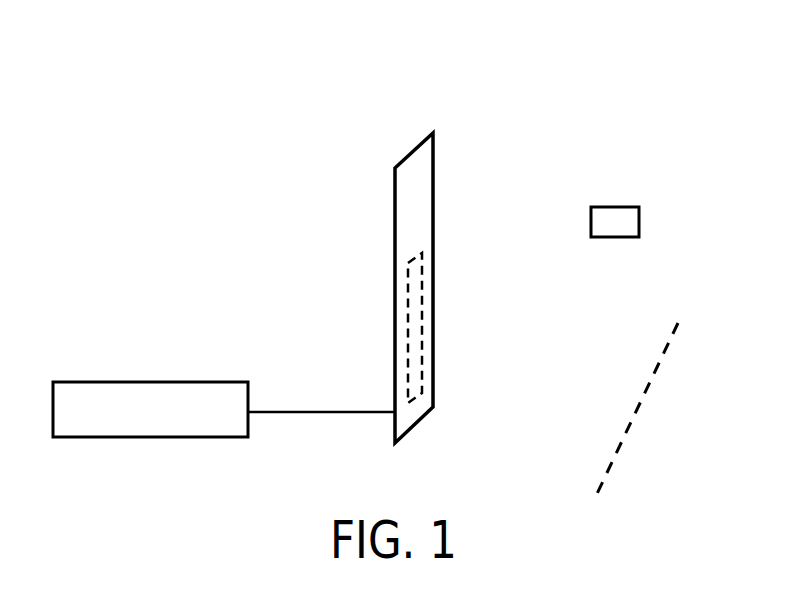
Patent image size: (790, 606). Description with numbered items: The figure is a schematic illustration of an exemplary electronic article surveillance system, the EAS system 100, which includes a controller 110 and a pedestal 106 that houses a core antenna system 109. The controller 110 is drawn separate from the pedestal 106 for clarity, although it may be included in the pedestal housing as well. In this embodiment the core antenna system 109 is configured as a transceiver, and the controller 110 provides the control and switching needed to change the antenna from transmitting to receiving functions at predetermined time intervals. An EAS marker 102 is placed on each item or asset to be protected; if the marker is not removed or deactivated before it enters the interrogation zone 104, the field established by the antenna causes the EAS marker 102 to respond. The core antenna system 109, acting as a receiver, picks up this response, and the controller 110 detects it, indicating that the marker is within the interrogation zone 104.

The EAS system 100 is at (273, 127).
The EAS marker 102 is at (620, 207).
The interrogation zone 104 is at (535, 102).
The pedestal 106 is at (396, 207).
The core antenna system 109 is at (408, 282).
The controller 110 is at (150, 381).